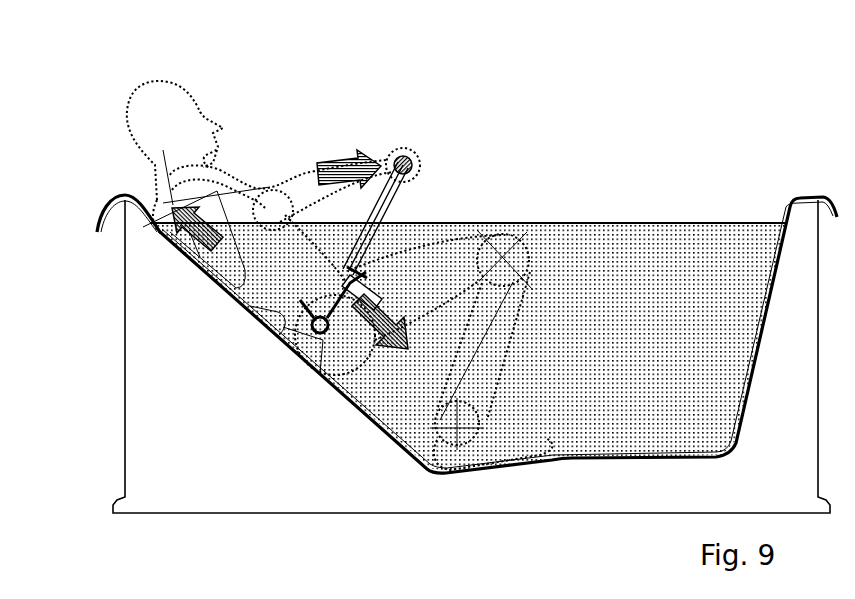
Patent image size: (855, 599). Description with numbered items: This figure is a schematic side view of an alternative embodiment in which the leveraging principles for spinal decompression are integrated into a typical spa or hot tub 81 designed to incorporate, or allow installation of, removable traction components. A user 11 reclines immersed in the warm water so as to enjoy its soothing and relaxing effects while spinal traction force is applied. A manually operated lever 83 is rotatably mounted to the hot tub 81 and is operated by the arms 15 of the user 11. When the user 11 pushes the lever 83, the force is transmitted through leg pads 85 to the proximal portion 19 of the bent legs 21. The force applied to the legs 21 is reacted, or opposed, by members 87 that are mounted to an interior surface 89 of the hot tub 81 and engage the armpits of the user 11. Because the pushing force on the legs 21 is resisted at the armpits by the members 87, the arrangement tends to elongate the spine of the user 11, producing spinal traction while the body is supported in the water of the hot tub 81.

The user 11 is at (205, 80).
The arms 15 is at (303, 193).
The proximal portion of legs 19 is at (327, 343).
The legs 21 is at (500, 255).
The hot tub 81 is at (790, 200).
The lever 83 is at (384, 212).
The leg pads 85 is at (378, 300).
The members 87 is at (218, 270).
The interior surface 89 is at (262, 327).